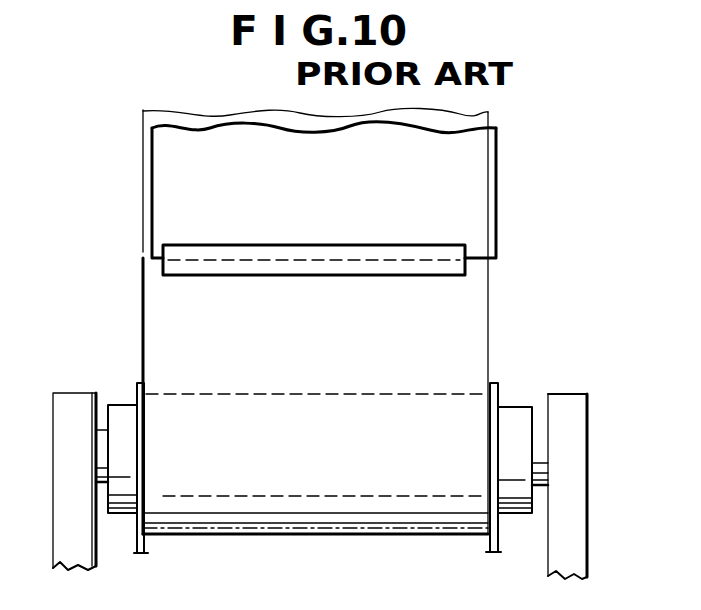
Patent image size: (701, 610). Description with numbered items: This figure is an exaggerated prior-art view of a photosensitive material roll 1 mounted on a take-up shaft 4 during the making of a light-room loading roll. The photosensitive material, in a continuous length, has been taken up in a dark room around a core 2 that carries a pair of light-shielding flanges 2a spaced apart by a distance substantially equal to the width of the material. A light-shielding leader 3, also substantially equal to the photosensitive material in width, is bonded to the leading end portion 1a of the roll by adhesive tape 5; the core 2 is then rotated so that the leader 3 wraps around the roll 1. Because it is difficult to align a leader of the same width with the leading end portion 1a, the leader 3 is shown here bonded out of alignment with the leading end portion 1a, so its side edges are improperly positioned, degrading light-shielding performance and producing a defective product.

The photosensitive material roll 1 is at (375, 542).
The leading end portion 1a is at (368, 283).
The core 2 is at (518, 500).
The light-shielding flanges 2a is at (137, 385).
The light-shielding leader 3 is at (457, 199).
The take-up shaft 4 is at (100, 444).
The adhesive tape 5 is at (184, 245).